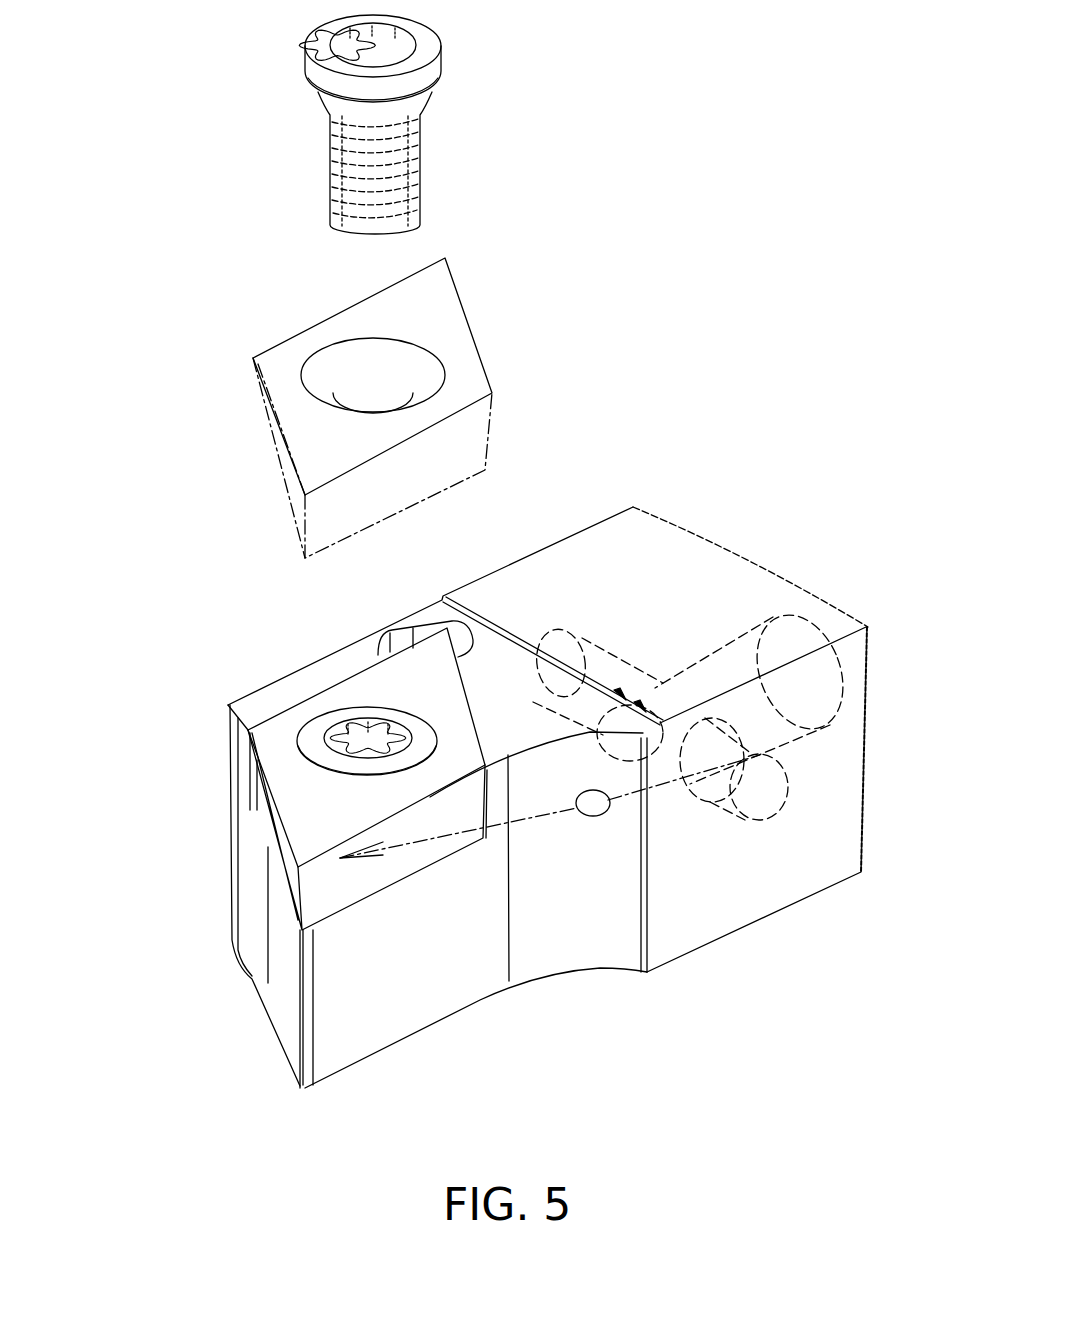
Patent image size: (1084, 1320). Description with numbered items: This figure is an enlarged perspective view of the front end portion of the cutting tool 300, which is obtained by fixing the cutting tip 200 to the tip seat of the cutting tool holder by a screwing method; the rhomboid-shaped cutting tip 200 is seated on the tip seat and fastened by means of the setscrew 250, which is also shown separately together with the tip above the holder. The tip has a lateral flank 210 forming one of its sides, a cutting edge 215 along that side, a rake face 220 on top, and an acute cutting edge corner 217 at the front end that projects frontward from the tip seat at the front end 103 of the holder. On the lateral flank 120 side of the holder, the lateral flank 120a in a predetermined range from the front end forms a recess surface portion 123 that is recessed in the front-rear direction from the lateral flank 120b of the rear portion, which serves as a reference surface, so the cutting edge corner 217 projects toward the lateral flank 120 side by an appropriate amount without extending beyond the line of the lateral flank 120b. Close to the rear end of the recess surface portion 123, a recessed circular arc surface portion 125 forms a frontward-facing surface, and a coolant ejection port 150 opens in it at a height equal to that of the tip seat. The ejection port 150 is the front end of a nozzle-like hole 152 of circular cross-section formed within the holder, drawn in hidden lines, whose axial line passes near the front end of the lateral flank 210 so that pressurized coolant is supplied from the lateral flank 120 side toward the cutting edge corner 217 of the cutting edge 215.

The cutting tool 300 is at (503, 812).
The cutting tip 200 is at (244, 386).
The setscrew 250 is at (323, 151).
The lateral flank 210 is at (367, 492).
The cutting edge 215 is at (342, 472).
The cutting edge corner 217 is at (300, 491).
The rake face 220 is at (306, 469).
The lateral flank 120 is at (544, 812).
The front end 103 is at (288, 1022).
The lateral flank 120a is at (345, 1050).
The lateral flank 120b is at (707, 913).
The recess surface portion 123 is at (437, 990).
The circular arc surface portion 125 is at (590, 922).
The coolant ejection port 150 is at (586, 805).
The nozzle-like hole 152 is at (659, 818).